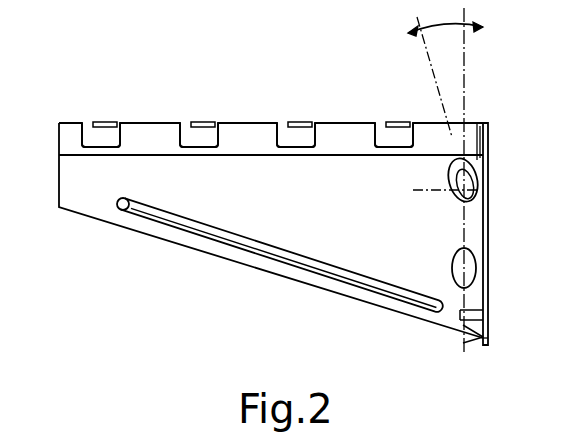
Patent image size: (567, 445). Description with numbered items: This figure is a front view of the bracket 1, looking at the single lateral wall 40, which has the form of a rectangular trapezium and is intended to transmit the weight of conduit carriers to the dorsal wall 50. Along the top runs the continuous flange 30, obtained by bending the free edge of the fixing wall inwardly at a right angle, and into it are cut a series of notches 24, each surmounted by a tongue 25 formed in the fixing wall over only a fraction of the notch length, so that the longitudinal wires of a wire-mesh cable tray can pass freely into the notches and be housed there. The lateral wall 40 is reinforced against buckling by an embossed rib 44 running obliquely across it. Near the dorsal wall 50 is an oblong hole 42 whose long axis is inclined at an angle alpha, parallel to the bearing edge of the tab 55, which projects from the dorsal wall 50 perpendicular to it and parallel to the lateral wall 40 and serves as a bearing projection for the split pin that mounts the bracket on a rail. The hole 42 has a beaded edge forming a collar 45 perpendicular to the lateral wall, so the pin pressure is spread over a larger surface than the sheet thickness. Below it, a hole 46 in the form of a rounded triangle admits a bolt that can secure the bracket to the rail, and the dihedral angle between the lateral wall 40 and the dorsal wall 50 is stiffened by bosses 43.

The bracket 1 is at (135, 262).
The notches 24 is at (182, 147).
The tongues 25 is at (197, 137).
The continuous flange 30 is at (60, 147).
The lateral wall 40 is at (85, 197).
The hole 42 is at (440, 160).
The bosses 43 is at (452, 268).
The embossed rib 44 is at (255, 250).
The collar 45 is at (447, 165).
The hole 46 is at (478, 265).
The dorsal wall 50 is at (489, 262).
The tab 55 is at (474, 147).